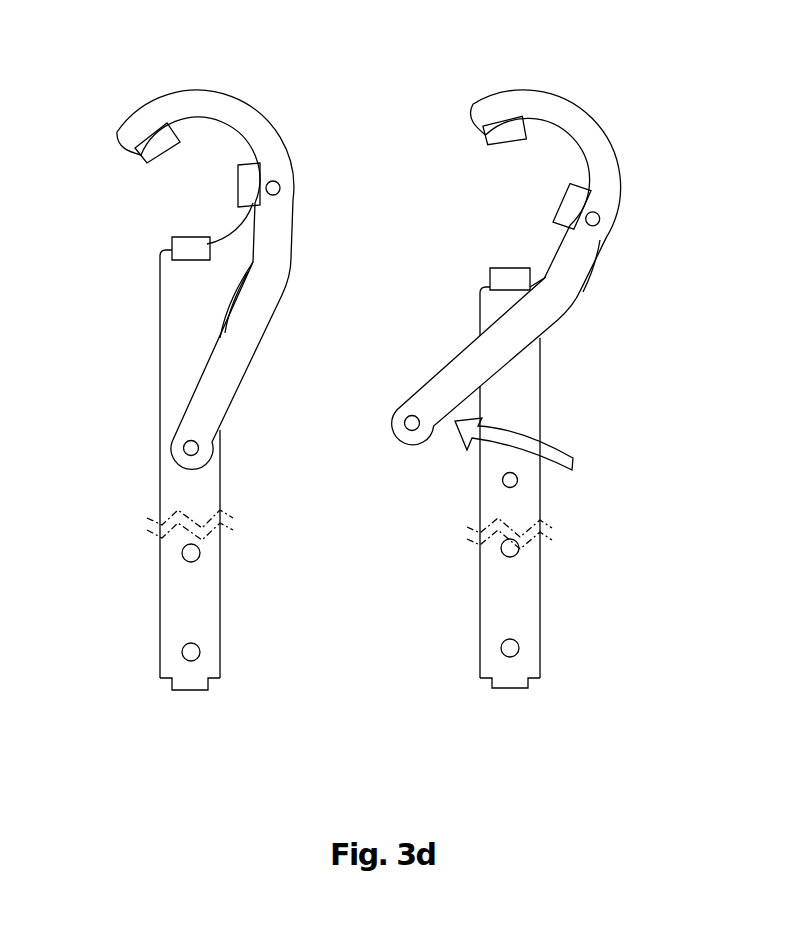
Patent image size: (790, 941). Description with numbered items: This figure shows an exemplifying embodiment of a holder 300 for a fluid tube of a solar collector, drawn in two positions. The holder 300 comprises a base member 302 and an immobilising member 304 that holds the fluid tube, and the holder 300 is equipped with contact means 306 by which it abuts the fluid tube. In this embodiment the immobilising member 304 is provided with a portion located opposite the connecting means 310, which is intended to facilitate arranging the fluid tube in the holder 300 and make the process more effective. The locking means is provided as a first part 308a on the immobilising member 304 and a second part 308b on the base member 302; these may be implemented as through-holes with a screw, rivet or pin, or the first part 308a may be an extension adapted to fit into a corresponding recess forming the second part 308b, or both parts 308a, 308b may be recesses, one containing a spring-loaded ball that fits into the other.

The holder 300 is at (399, 101).
The base member 302 is at (205, 491).
The immobilising member 304 is at (130, 130).
The contact means 306 is at (185, 245).
The first part of the locking means 308a is at (186, 450).
The second part of the locking means 308b is at (503, 481).
The connecting means 310 is at (599, 224).